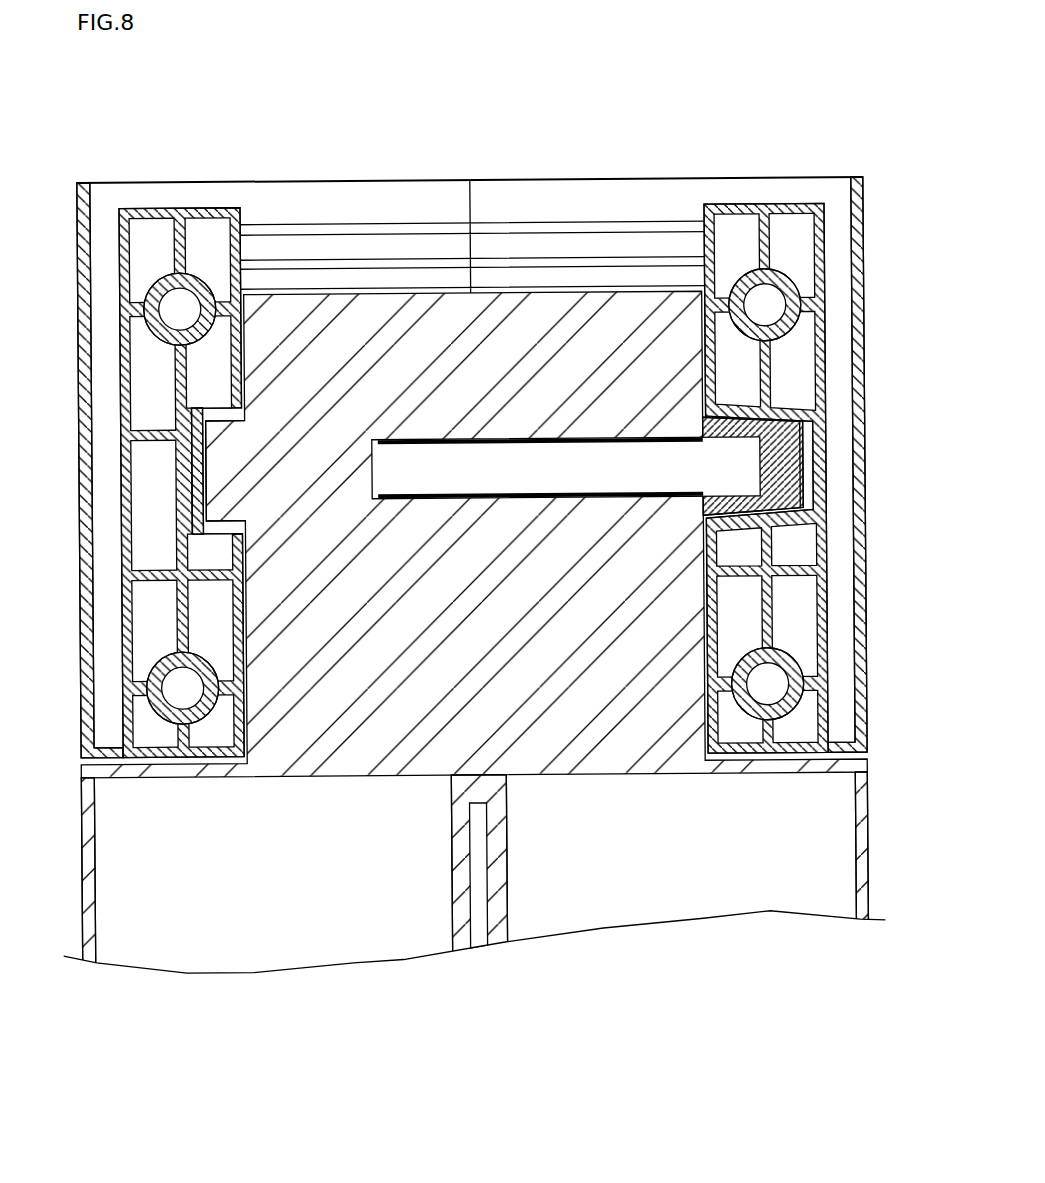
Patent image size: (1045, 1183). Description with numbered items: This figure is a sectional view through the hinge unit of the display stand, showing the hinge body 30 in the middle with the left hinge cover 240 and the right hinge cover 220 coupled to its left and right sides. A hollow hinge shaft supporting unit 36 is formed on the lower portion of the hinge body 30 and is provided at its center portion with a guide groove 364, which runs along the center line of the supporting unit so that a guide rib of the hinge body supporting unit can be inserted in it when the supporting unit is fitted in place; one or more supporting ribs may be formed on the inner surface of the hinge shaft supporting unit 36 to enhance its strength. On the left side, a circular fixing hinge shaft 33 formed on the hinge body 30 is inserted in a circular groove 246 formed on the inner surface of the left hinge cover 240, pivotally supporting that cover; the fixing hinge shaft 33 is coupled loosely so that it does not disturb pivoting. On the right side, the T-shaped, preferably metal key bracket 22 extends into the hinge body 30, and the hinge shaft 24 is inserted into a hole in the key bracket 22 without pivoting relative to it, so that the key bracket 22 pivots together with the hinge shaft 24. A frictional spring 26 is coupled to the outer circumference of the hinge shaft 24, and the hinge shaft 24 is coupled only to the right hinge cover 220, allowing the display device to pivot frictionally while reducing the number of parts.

The right hinge cover 220 is at (865, 237).
The left hinge cover 240 is at (190, 197).
The fixing hinge shaft 33 is at (218, 419).
The circular groove 246 is at (190, 433).
The frictional spring 26 is at (655, 439).
The hinge shaft 24 is at (805, 442).
The key bracket 22 is at (750, 461).
The hinge body 30 is at (627, 616).
The hinge shaft supporting unit 36 is at (867, 819).
The guide groove 364 is at (472, 940).